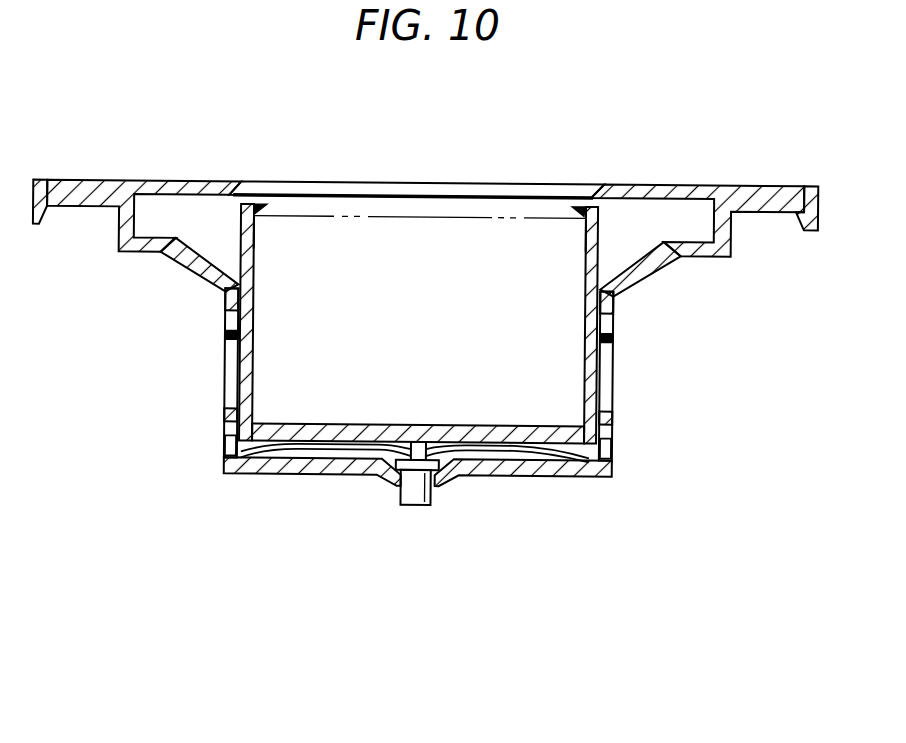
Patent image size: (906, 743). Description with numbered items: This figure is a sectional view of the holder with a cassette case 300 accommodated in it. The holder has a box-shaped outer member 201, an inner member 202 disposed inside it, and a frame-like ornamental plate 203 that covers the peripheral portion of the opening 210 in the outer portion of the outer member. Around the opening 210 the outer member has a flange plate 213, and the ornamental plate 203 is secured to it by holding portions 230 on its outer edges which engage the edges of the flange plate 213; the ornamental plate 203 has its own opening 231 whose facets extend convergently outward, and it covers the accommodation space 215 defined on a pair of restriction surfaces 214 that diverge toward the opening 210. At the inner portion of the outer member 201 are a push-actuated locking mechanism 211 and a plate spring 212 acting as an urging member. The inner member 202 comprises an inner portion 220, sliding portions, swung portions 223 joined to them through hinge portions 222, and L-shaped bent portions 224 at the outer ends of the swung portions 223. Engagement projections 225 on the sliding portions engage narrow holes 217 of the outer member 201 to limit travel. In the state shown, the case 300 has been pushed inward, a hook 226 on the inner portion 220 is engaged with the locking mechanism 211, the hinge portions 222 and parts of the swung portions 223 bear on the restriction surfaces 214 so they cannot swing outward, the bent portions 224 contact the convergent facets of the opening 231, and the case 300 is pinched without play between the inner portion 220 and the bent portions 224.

The outer member 201 is at (658, 272).
The inner member 202 is at (262, 360).
The ornamental plate 203 is at (710, 183).
The opening 210 is at (398, 195).
The locking mechanism 211 is at (418, 497).
The plate spring 212 is at (532, 462).
The flange plate 213 is at (82, 205).
The restriction surface 214 is at (227, 333).
The accommodation space 215 is at (200, 227).
The narrow hole 217 is at (230, 380).
The inner portion 220 is at (383, 432).
The hinge portion 222 is at (590, 312).
The swung portion 223 is at (253, 243).
The bent portion 224 is at (252, 203).
The engagement projection 225 is at (227, 422).
The hook 226 is at (367, 474).
The holding portion 230 is at (806, 226).
The opening 231 is at (497, 195).
The cassette case 300 is at (365, 216).